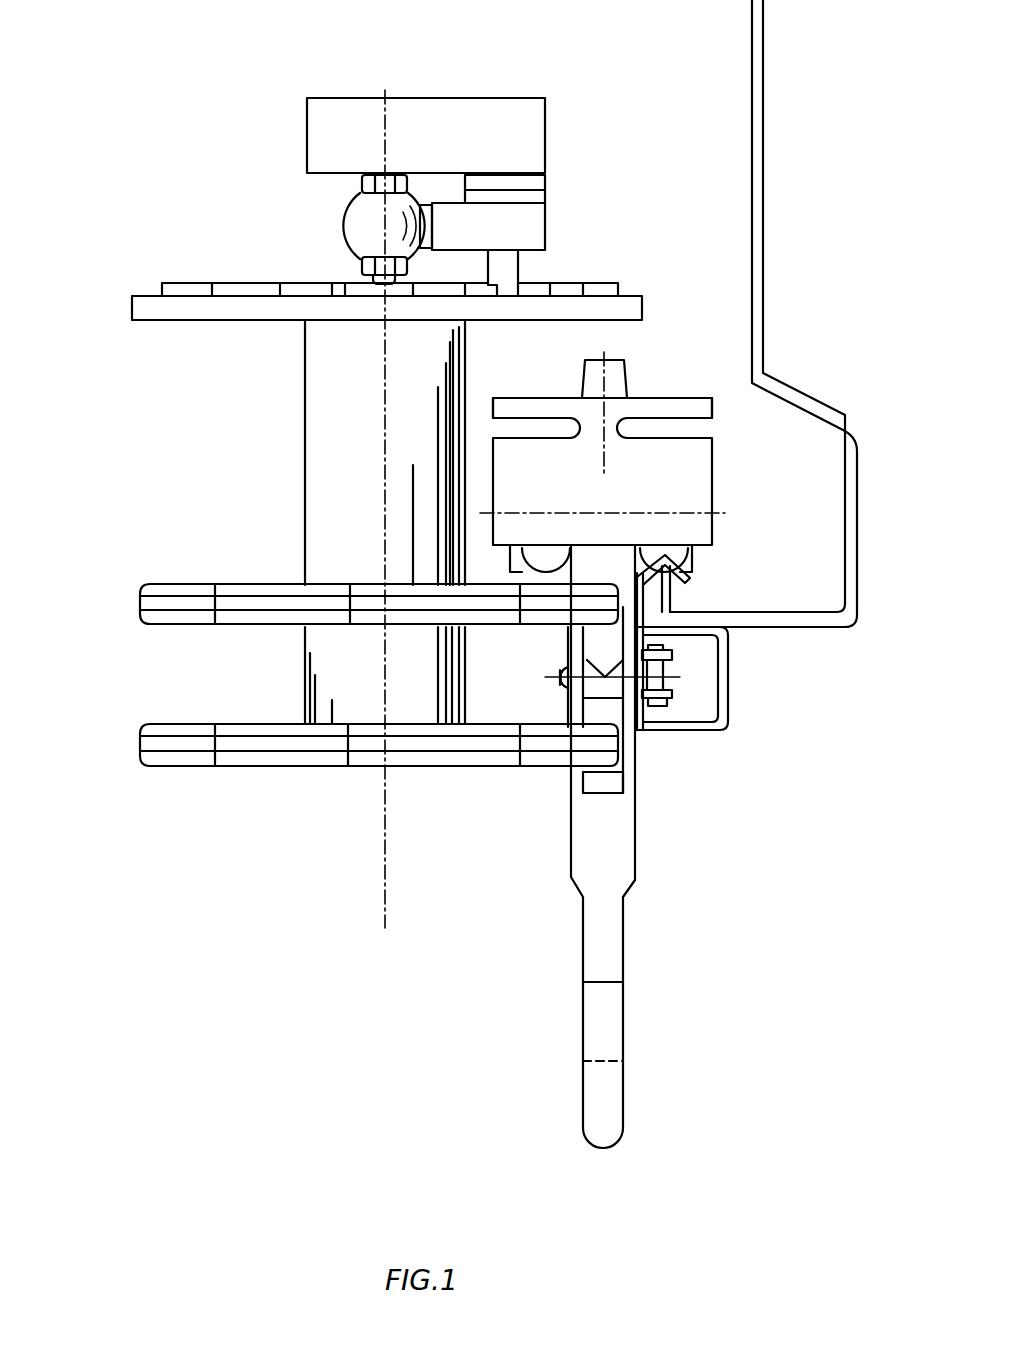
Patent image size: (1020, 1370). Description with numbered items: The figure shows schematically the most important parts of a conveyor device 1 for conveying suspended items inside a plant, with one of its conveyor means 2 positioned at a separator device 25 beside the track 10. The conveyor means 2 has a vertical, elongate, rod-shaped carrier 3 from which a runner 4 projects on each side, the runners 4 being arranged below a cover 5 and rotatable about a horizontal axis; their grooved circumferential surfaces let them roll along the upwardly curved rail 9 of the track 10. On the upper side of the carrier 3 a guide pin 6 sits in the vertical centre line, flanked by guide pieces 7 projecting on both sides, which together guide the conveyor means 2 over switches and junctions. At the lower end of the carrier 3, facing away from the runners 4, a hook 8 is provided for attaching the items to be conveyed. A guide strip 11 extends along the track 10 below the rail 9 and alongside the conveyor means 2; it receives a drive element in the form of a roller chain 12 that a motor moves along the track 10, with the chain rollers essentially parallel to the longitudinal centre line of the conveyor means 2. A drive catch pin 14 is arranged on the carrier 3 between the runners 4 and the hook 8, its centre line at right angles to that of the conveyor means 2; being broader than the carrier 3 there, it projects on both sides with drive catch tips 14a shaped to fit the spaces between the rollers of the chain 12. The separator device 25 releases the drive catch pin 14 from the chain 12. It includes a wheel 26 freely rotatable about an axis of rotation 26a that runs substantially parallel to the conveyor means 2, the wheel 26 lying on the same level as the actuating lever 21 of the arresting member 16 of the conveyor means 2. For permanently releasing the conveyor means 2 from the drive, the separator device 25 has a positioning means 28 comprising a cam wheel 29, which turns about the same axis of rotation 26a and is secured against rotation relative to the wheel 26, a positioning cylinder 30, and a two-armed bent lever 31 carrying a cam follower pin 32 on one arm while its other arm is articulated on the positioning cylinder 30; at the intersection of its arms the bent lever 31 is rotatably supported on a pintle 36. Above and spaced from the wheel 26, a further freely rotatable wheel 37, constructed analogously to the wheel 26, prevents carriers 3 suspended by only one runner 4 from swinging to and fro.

The conveyor device 1 is at (190, 95).
The conveyor means 2 is at (690, 372).
The carrier 3 is at (607, 857).
The runner 4 is at (510, 557).
The cover 5 is at (693, 475).
The guide pin 6 is at (597, 380).
The guide pieces 7 is at (547, 397).
The hook 8 is at (605, 1098).
The rail 9 is at (688, 578).
The track 10 is at (748, 642).
The guide strip 11 is at (706, 692).
The chain 12 is at (668, 698).
The drive catch pin 14 is at (565, 685).
The drive catch tips 14a is at (556, 672).
The arresting member 16 is at (598, 641).
The actuating lever 21 is at (619, 765).
The separator device 25 is at (318, 778).
The wheel 26 is at (170, 760).
The axis of rotation 26a is at (388, 845).
The positioning means 28 is at (210, 241).
The cam wheel 29 is at (190, 310).
The positioning cylinder 30 is at (345, 222).
The bent lever 31 is at (535, 222).
The cam follower pin 32 is at (505, 272).
The pintle 36 is at (510, 195).
The further wheel 37 is at (170, 615).